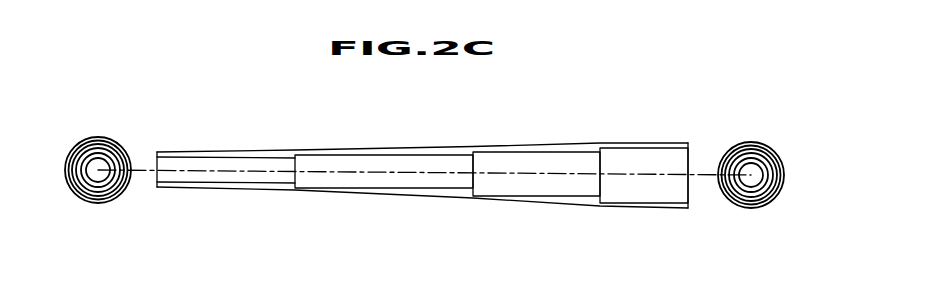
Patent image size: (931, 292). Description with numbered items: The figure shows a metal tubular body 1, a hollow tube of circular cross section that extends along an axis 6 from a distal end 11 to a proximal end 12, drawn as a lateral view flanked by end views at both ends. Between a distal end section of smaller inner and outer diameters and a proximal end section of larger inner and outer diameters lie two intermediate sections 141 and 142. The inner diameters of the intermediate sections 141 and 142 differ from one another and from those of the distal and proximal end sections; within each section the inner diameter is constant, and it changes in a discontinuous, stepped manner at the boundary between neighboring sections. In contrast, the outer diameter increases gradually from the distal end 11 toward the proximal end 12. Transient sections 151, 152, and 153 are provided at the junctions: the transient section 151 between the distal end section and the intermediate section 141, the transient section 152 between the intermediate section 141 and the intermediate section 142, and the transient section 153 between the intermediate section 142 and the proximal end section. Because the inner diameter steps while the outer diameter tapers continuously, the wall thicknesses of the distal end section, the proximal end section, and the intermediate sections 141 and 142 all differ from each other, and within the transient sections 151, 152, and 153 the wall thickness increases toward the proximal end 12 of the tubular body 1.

The tubular body 1 is at (482, 143).
The axis 6 is at (702, 167).
The distal end 11 is at (100, 178).
The proximal end 12 is at (689, 209).
The intermediate section 141 is at (375, 154).
The intermediate section 142 is at (542, 151).
The transient section 151 is at (106, 143).
The transient section 152 is at (87, 140).
The transient section 153 is at (72, 192).